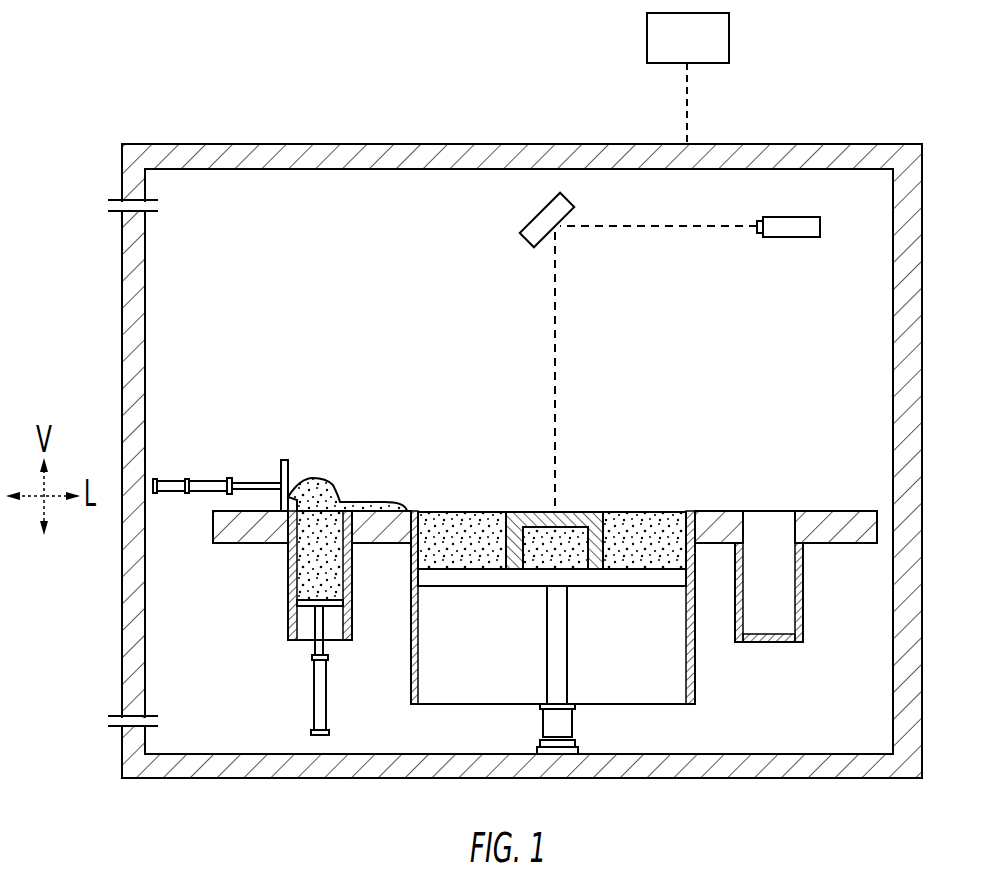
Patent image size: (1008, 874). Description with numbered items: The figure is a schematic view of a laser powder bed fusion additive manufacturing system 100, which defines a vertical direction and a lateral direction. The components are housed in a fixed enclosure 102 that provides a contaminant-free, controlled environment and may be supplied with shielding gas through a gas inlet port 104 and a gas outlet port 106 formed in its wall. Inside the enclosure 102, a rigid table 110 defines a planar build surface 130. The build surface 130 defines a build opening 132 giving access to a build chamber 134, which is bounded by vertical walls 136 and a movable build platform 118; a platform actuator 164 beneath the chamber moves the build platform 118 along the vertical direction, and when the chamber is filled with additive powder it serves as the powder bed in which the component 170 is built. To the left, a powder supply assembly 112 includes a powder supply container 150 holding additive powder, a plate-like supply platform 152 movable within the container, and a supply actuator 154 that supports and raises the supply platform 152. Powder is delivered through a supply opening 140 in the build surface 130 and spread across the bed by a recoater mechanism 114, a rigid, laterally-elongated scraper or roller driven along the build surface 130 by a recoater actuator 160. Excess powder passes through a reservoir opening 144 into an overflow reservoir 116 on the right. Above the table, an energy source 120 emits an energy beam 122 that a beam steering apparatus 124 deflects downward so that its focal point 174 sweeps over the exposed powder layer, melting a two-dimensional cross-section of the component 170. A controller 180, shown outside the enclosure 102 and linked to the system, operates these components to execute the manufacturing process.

The additive manufacturing system 100 is at (100, 250).
The enclosure 102 is at (333, 160).
The gas inlet port 104 is at (158, 212).
The gas outlet port 106 is at (158, 727).
The table 110 is at (818, 540).
The powder supply assembly 112 is at (272, 606).
The recoater mechanism 114 is at (284, 460).
The overflow reservoir 116 is at (735, 590).
The build platform 118 is at (441, 588).
The energy source 120 is at (805, 217).
The energy beam 122 is at (552, 366).
The beam steering apparatus 124 is at (526, 213).
The build surface 130 is at (826, 498).
The build opening 132 is at (684, 525).
The build chamber 134 is at (680, 668).
The vertical walls 136 is at (412, 668).
The supply opening 140 is at (336, 490).
The reservoir opening 144 is at (792, 527).
The powder supply container 150 is at (352, 571).
The supply platform 152 is at (336, 603).
The supply actuator 154 is at (318, 695).
The recoater actuator 160 is at (210, 480).
The platform actuator 164 is at (545, 726).
The component 170 is at (516, 588).
The focal point 174 is at (553, 511).
The controller 180 is at (688, 78).